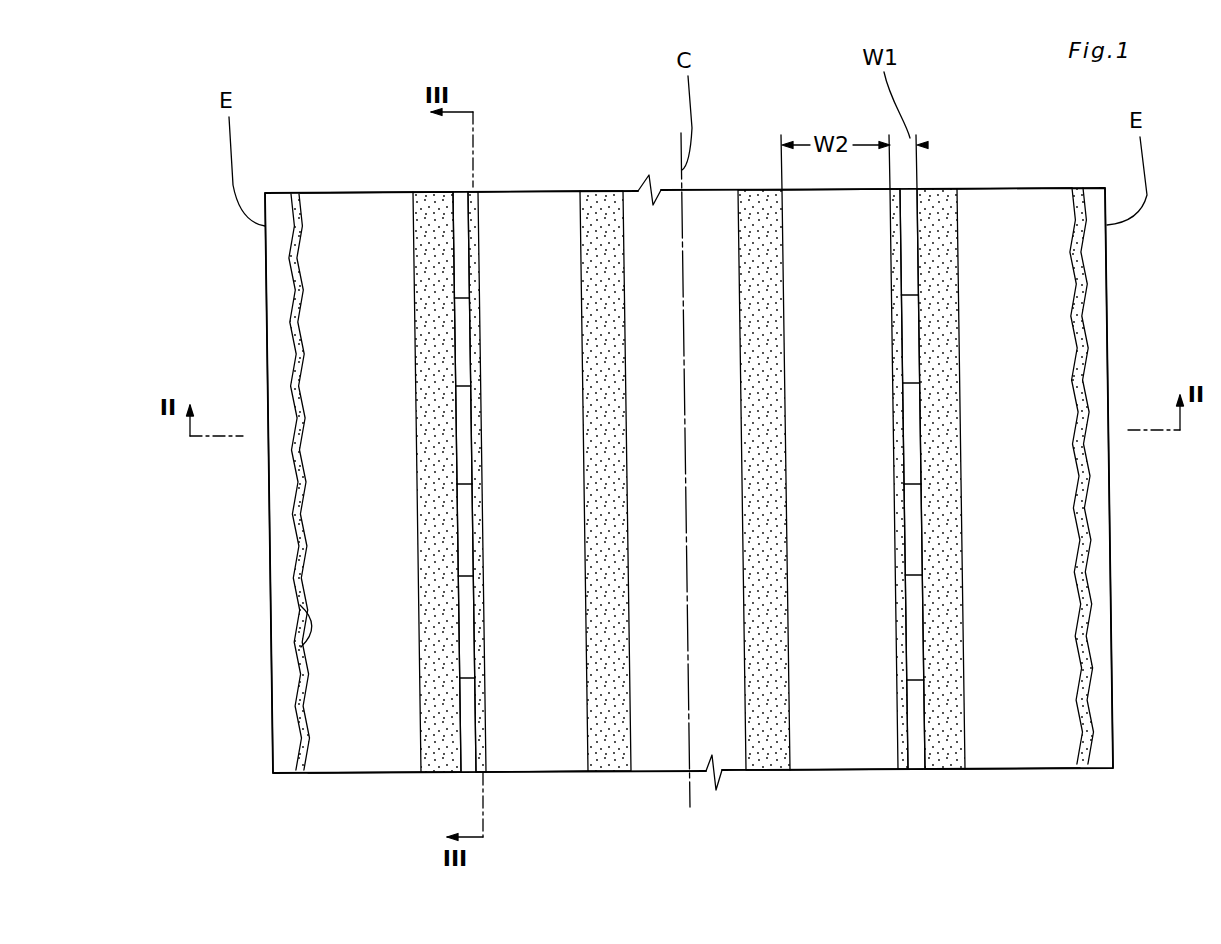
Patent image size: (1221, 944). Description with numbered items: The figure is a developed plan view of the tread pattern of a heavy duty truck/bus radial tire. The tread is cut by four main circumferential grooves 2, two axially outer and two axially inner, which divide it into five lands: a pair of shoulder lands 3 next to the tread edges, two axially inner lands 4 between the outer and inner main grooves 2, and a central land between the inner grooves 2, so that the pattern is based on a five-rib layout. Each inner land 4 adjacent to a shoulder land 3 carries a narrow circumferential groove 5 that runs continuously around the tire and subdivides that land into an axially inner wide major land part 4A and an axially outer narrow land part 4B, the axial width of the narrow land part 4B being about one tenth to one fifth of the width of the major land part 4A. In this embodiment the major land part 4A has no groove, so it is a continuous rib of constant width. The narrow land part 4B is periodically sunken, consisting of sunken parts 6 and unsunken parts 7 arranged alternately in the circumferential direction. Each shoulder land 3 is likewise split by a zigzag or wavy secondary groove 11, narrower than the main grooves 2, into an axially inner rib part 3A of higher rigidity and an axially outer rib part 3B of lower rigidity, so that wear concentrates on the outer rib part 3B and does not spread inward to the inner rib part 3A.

The main circumferential groove 2 is at (432, 186).
The shoulder land 3 is at (670, 533).
The axially inner rib part 3A is at (695, 509).
The axially outer rib part 3B is at (281, 735).
The inner land 4 is at (696, 554).
The major land part 4A is at (574, 752).
The narrow land part 4B is at (467, 720).
The narrow circumferential groove 5 is at (678, 500).
The sunken part 6 is at (466, 335).
The unsunken part 7 is at (456, 237).
The secondary groove 11 is at (303, 647).